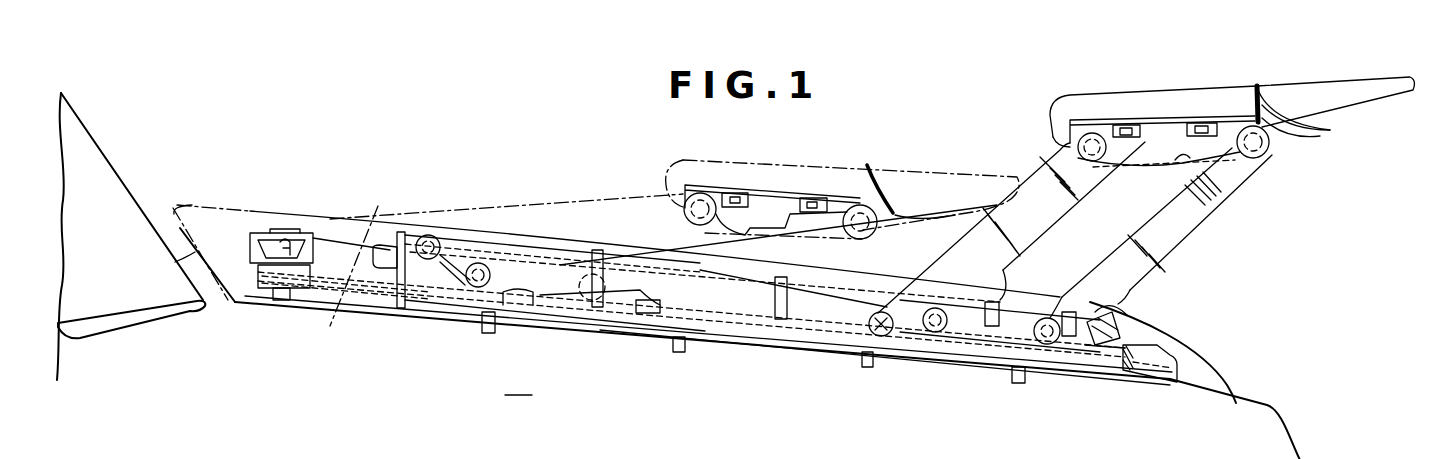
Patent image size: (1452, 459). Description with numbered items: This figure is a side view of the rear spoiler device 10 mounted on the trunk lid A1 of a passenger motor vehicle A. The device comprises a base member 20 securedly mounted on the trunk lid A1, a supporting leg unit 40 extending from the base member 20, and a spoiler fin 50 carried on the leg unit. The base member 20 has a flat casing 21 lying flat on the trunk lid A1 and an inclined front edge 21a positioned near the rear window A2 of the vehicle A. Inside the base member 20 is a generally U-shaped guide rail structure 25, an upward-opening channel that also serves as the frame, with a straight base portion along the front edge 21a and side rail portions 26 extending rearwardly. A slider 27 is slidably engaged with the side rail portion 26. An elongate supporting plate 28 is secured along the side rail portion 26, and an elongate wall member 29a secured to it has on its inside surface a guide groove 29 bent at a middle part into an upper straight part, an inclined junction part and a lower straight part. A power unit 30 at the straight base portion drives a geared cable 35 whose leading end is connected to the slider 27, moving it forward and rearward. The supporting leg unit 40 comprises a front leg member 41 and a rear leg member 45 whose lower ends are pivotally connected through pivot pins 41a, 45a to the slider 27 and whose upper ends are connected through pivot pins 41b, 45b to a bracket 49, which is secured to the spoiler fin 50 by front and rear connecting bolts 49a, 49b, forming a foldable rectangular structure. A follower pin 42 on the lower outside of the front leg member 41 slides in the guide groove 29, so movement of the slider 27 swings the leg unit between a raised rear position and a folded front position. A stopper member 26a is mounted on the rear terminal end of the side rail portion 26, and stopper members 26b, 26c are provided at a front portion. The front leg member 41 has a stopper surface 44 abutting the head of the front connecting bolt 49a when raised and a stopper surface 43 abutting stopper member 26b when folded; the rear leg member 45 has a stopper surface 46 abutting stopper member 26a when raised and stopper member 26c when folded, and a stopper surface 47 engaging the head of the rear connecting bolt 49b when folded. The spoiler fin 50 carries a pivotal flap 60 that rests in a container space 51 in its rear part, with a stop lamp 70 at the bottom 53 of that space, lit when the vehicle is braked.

The rear spoiler device 10 is at (1199, 103).
The base member 20 is at (697, 267).
The flat casing 21 is at (259, 207).
The inclined front edge 21a is at (190, 258).
The U-shaped guide rail structure 25 is at (340, 306).
The side rail portion 26 is at (733, 320).
The stopper member 26a is at (1134, 316).
The stopper member 26b is at (517, 302).
The stopper member 26c is at (646, 306).
The slider 27 is at (1102, 312).
The supporting plate 28 is at (450, 310).
The guide groove 29 is at (545, 250).
The elongate wall member 29a is at (493, 240).
The power unit 30 is at (323, 233).
The geared cable 35 is at (368, 253).
The supporting leg unit 40 is at (1095, 225).
The front leg member 41 is at (1065, 170).
The pivot pin 41a is at (944, 307).
The pivot pin 41b is at (1066, 128).
The follower pin 42 is at (887, 337).
The stopper surface 43 is at (1005, 300).
The stopper surface 44 is at (1112, 124).
The rear leg member 45 is at (1140, 232).
The pivot pin 45a is at (1061, 317).
The pivot pin 45b is at (1266, 158).
The stopper surface 46 is at (1090, 345).
The stopper surface 47 is at (1182, 164).
The bracket 49 is at (1161, 118).
The front connecting bolt 49a is at (1186, 150).
The rear connecting bolt 49b is at (1213, 122).
The spoiler fin 50 is at (1179, 114).
The container space 51 is at (1314, 132).
The bottom 53 is at (1272, 104).
The flap 60 is at (1335, 99).
The stop lamp 70 is at (1258, 103).
The passenger motor vehicle A is at (518, 383).
The trunk lid A1 is at (1216, 388).
The rear window A2 is at (112, 160).